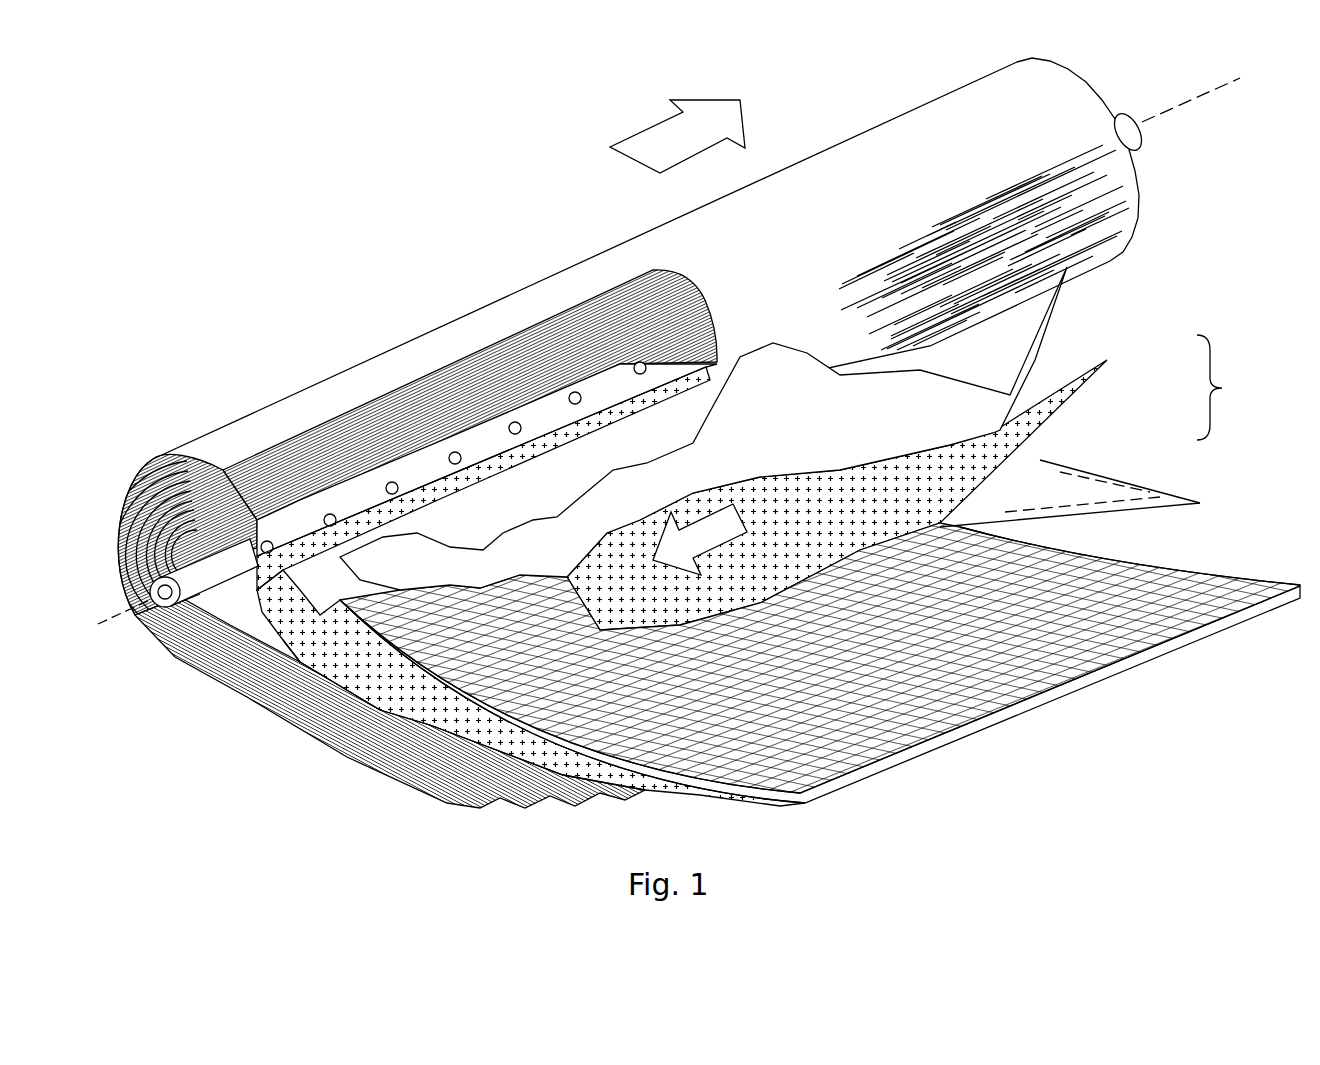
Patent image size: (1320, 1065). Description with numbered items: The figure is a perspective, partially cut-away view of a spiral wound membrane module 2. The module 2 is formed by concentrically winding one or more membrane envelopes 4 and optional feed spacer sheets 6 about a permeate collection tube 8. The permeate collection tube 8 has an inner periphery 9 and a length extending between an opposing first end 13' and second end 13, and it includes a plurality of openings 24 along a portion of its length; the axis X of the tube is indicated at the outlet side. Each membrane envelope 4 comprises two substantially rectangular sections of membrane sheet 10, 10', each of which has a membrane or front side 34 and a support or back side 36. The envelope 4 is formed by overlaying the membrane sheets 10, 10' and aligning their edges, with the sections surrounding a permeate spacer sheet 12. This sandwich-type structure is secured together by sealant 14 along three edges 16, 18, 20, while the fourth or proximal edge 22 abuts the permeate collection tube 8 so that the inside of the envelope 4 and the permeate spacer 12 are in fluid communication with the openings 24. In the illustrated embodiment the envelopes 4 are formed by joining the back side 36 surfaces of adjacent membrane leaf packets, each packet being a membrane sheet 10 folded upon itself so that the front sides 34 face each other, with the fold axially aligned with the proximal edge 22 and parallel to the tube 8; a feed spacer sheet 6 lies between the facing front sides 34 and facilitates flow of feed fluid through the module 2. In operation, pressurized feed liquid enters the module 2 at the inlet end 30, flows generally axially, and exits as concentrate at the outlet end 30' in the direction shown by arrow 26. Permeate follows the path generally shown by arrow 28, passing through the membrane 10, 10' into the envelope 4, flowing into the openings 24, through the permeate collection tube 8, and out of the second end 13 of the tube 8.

The spiral wound membrane module 2 is at (518, 260).
The membrane envelope 4 is at (735, 395).
The feed spacer sheet 6 is at (1013, 713).
The permeate collection tube 8 is at (150, 478).
The inner periphery 9 is at (172, 608).
The membrane sheet 10 is at (1103, 459).
The membrane sheet 10' is at (773, 428).
The permeate spacer sheet 12 is at (457, 720).
The second end 13 is at (1135, 159).
The first end 13' is at (144, 645).
The sealant 14 is at (523, 753).
The edge 16 is at (430, 597).
The edge 18 is at (1167, 490).
The edge 20 is at (1157, 510).
The proximal edge 22 is at (345, 543).
The openings 24 is at (388, 482).
The arrow 26 is at (633, 132).
The arrow 28 is at (787, 558).
The inlet end 30 is at (178, 512).
The outlet end 30' is at (1154, 112).
The front side 34 is at (780, 790).
The back side 36 is at (1230, 622).
The axis X is at (1213, 88).